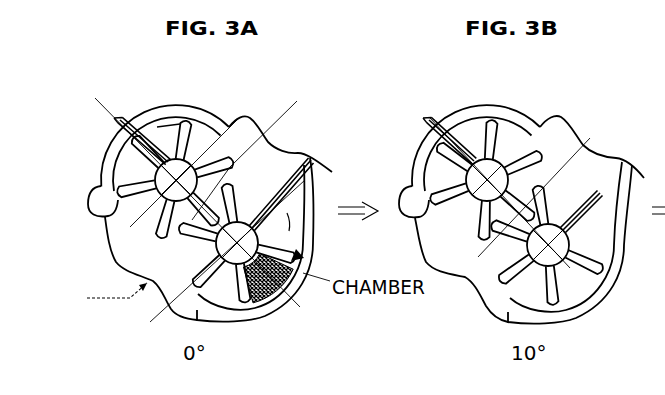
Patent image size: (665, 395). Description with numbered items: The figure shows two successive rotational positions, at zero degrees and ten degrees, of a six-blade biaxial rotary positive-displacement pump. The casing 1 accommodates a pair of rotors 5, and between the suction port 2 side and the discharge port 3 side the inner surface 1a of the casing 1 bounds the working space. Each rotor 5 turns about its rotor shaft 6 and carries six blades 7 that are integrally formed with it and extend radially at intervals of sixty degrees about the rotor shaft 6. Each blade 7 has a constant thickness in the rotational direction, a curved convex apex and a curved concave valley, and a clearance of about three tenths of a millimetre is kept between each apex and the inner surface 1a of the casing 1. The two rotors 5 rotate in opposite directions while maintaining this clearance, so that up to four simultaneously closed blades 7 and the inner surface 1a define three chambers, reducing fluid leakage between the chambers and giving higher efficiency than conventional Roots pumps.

The casing 1 is at (129, 130).
The inner surface of the casing 1a is at (182, 112).
The suction port 2 is at (252, 120).
The discharge port 3 is at (110, 242).
The rotor 5 is at (143, 138).
The rotor shaft 6 is at (155, 170).
The blade 7 is at (277, 202).